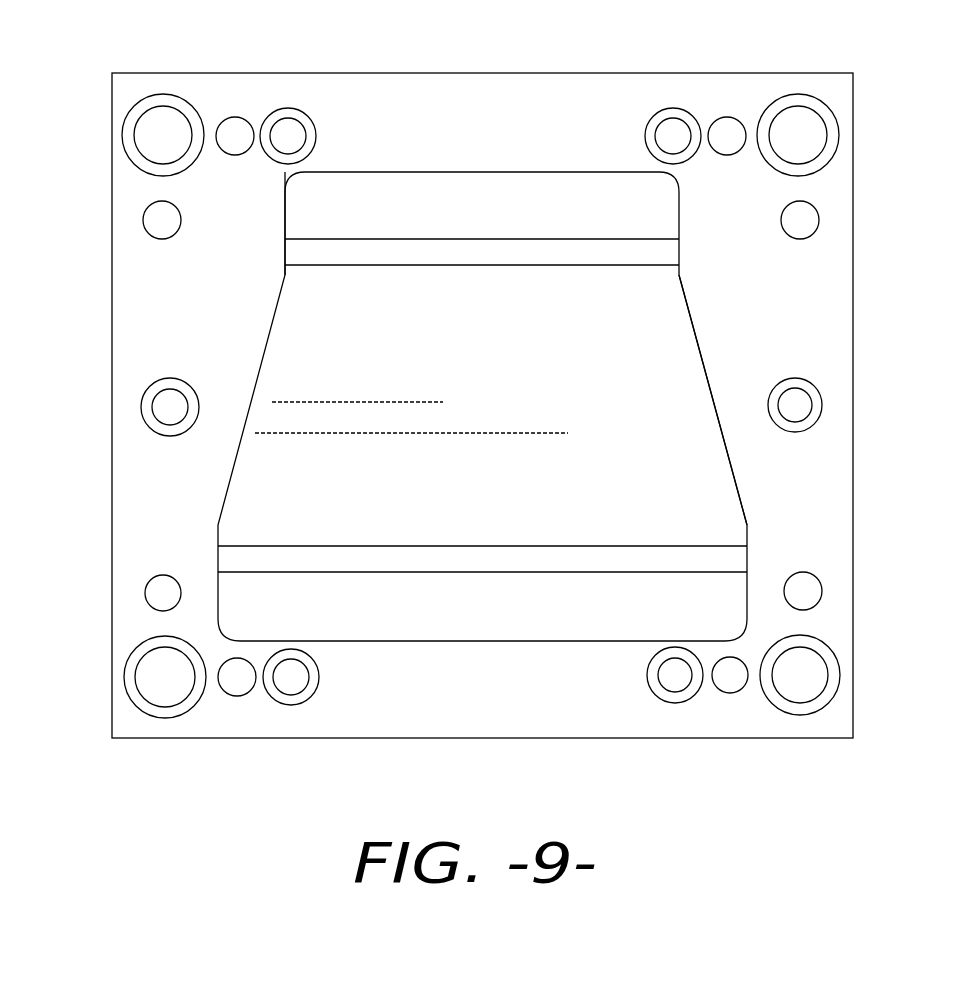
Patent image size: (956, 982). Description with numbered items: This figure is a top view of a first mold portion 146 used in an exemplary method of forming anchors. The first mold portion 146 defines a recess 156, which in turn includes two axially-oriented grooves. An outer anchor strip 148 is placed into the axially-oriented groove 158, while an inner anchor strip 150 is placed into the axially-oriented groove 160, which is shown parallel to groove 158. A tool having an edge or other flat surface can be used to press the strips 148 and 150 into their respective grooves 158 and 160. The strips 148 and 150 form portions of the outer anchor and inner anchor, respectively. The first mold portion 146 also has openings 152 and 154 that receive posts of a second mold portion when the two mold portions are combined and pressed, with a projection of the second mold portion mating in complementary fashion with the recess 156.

The first mold portion 146 is at (248, 98).
The outer anchor strip 148 is at (233, 559).
The inner anchor strip 150 is at (298, 252).
The opening 152 is at (795, 132).
The opening 154 is at (163, 676).
The recess 156 is at (702, 348).
The axially-oriented groove 158 is at (472, 543).
The axially-oriented groove 160 is at (448, 238).